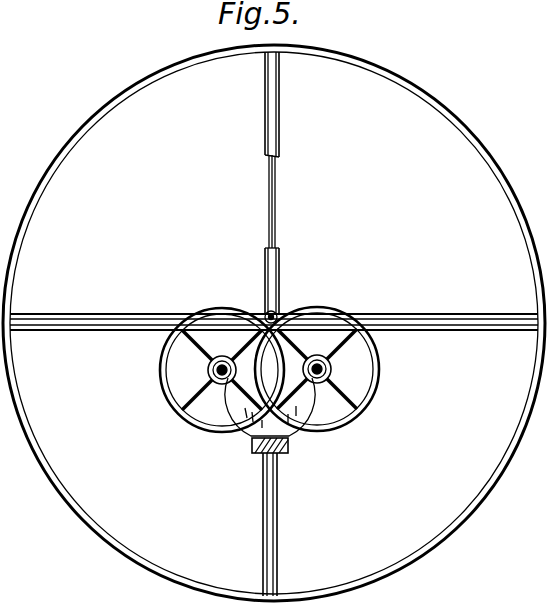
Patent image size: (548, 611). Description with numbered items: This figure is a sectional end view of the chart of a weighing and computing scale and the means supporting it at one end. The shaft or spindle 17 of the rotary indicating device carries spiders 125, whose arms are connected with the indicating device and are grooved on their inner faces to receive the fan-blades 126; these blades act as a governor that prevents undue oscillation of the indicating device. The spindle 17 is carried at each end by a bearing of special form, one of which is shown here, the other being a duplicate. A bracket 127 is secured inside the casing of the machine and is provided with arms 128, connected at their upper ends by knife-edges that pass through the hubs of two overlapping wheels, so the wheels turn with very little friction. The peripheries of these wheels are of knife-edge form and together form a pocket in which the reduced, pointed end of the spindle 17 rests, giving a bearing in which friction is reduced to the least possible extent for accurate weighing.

The shaft or spindle 17 is at (283, 313).
The spider 125 is at (121, 331).
The fan-blade 126 is at (276, 206).
The bracket 127 is at (288, 448).
The arm 128 is at (218, 420).